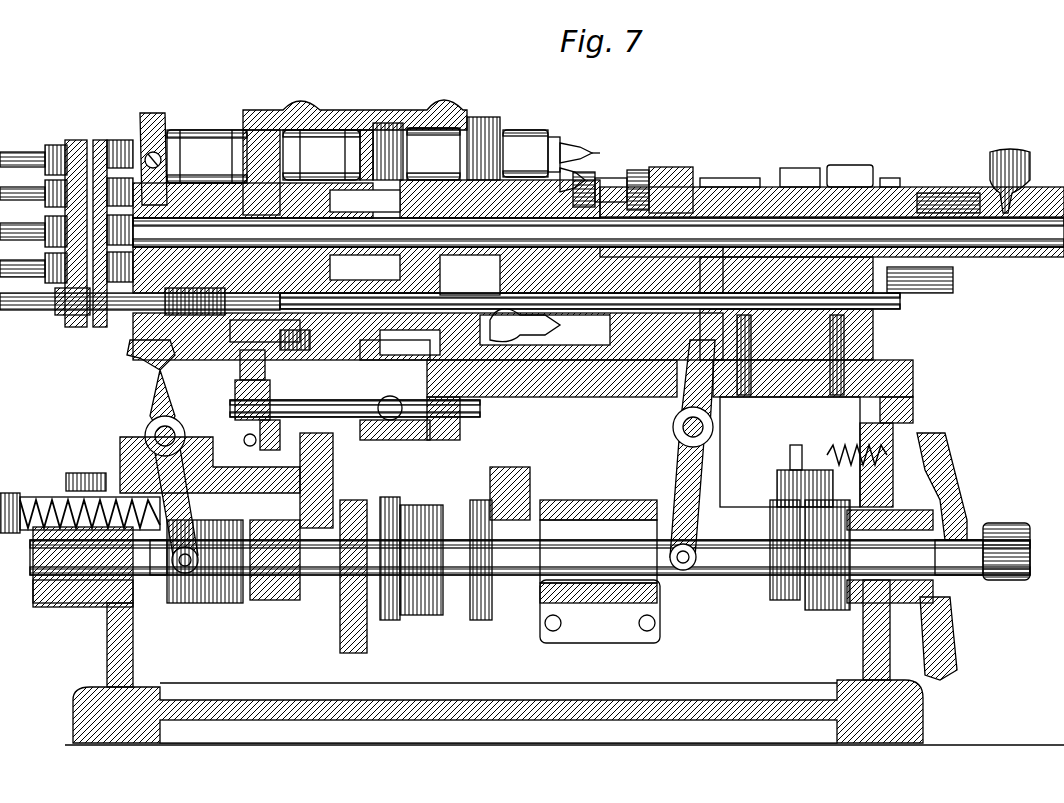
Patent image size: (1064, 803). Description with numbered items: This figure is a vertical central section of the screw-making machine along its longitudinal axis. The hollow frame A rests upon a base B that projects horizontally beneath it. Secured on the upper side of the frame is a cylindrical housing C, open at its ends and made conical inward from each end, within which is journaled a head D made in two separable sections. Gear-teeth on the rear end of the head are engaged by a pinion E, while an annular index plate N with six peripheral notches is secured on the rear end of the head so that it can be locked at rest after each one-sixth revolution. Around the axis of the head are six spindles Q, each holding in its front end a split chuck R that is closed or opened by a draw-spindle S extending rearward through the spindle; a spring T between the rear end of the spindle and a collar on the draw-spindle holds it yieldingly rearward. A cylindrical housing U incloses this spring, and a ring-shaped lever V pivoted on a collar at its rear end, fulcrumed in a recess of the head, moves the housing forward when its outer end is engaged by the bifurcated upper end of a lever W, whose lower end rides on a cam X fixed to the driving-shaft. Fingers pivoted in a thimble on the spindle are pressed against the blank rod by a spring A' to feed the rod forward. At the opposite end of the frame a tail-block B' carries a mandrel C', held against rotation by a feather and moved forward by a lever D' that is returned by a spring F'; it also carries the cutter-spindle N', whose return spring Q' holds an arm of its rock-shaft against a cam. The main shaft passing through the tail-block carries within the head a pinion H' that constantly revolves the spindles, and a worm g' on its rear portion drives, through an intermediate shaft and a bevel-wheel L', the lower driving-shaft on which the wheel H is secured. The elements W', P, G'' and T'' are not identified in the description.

The ring-shaped lever V is at (158, 128).
The cylindrical housing U is at (207, 148).
The spring T is at (150, 320).
The annular plate N is at (354, 104).
The spindle Q is at (301, 148).
The cylindrical housing C is at (410, 131).
The journaled head D is at (513, 136).
The split chuck R is at (605, 135).
The plunger W' is at (633, 169).
The pinion H' is at (366, 199).
The cutter-spindle N' is at (832, 177).
The worm g' is at (973, 181).
The draw-spindle S is at (598, 256).
The mandrel C' is at (526, 326).
The tail-block B' is at (806, 408).
The spring A' is at (518, 389).
The spring F' is at (366, 410).
The pinion E is at (248, 380).
The lever W is at (146, 452).
The bearing housing P is at (205, 450).
The cam X is at (200, 605).
The wheel H is at (530, 572).
The clutch G'' is at (579, 545).
The lever D' is at (675, 455).
The spring Q' is at (832, 464).
The gear T'' is at (841, 569).
The bevel-wheel L' is at (973, 556).
The hollow frame A is at (471, 633).
The base B is at (564, 712).